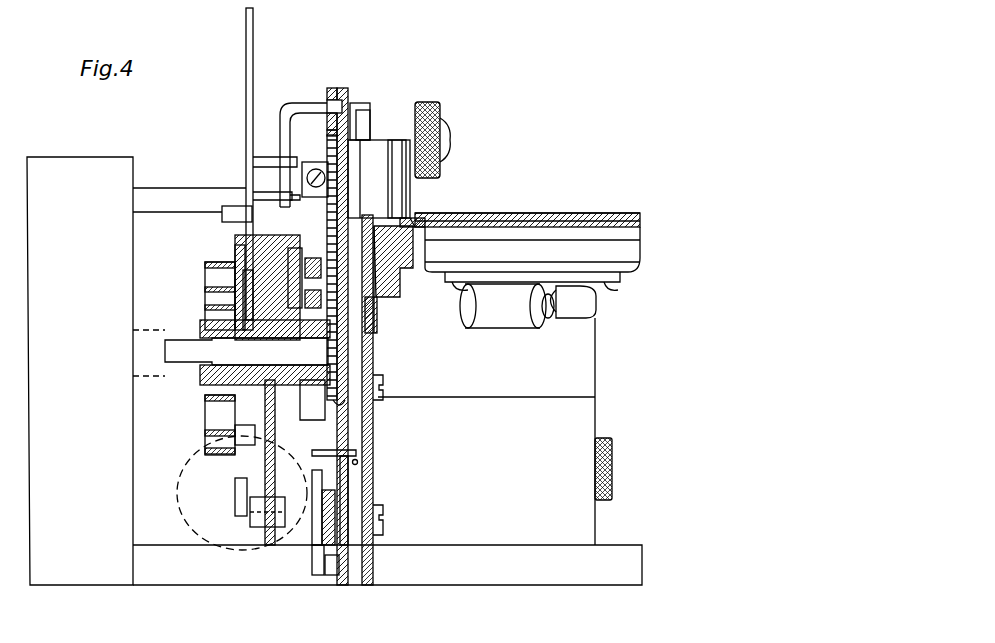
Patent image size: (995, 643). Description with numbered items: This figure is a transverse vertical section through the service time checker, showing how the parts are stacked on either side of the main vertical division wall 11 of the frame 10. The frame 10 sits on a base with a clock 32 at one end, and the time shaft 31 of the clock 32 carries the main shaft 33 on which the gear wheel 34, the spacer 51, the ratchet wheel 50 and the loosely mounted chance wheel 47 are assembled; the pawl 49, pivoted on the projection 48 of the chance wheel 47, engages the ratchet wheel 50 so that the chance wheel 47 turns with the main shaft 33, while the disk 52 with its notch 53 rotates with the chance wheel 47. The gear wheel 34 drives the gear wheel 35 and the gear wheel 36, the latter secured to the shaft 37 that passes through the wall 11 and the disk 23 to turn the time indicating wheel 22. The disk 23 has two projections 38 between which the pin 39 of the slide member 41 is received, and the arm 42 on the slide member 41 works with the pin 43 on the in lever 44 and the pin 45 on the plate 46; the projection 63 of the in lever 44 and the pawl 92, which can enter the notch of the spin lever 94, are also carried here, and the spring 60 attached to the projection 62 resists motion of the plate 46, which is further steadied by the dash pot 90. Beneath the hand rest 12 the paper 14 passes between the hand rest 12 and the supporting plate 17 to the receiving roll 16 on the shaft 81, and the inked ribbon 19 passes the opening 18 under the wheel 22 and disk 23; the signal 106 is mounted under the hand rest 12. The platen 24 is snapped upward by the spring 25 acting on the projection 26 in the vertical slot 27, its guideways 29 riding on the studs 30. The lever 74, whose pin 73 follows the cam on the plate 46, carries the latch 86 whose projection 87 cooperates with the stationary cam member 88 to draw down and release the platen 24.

The frame 10 is at (628, 548).
The main vertical division wall 11 is at (349, 90).
The hand rest 12 is at (600, 214).
The paper 14 is at (510, 214).
The receiving roll 16 is at (583, 467).
The supporting plate 17 is at (440, 215).
The opening 18 is at (425, 222).
The inked ribbon 19 is at (415, 222).
The time indicating wheel 22 is at (445, 118).
The disk 23 is at (385, 150).
The platen 24 is at (380, 336).
The spring 25 is at (358, 463).
The projection 26 is at (352, 451).
The vertical slot 27 is at (348, 476).
The slotted guideways 29 is at (374, 357).
The studs 30 is at (383, 384).
The time shaft 31 is at (170, 385).
The clock 32 is at (80, 371).
The main shaft 33 is at (225, 397).
The gear wheel 34 is at (347, 400).
The gear wheel 35 is at (330, 236).
The gear wheel 36 is at (330, 141).
The shaft 37 is at (300, 175).
The upwardly extending projections 38 is at (392, 150).
The pin 39 is at (355, 120).
The slide member 41 is at (333, 92).
The arm 42 is at (283, 112).
The pin 43 is at (262, 164).
The in lever 44 is at (243, 30).
The pin 45 is at (298, 198).
The plate 46 is at (270, 240).
The chance wheel 47 is at (302, 255).
The projection 48 is at (318, 265).
The pawl 49 is at (380, 292).
The ratchet wheel 50 is at (376, 320).
The spacer 51 is at (312, 418).
The disk 52 is at (235, 310).
The notch 53 is at (230, 290).
The spring 60 is at (215, 265).
The projection 62 is at (210, 440).
The projection 63 is at (235, 207).
The pin 73 is at (278, 508).
The lever 74 is at (305, 545).
The shaft 81 is at (612, 455).
The latch 86 is at (323, 476).
The projection 87 is at (320, 578).
The stationary cam member 88 is at (330, 578).
The dash pot 90 is at (242, 493).
The pawl 92 is at (238, 250).
The spin lever 94 is at (225, 300).
The signal 106 is at (640, 256).